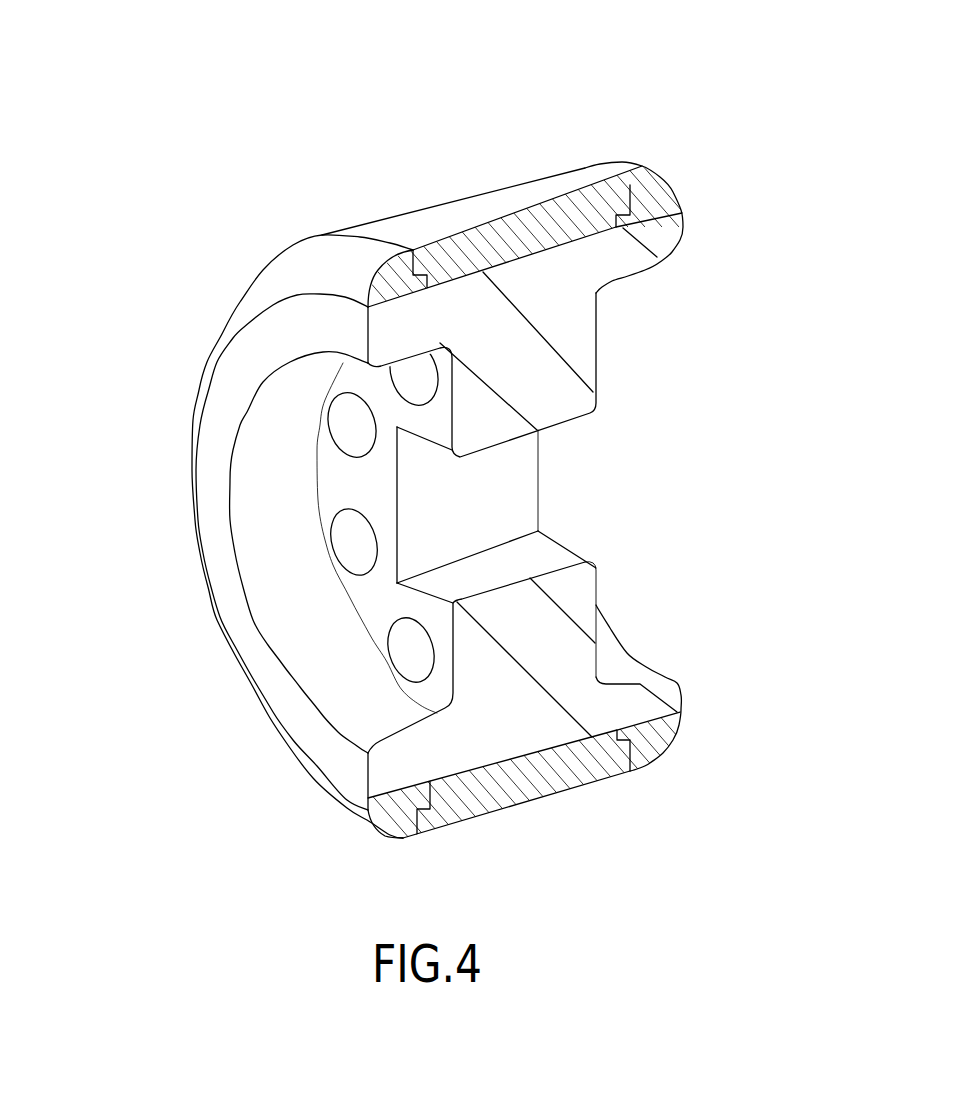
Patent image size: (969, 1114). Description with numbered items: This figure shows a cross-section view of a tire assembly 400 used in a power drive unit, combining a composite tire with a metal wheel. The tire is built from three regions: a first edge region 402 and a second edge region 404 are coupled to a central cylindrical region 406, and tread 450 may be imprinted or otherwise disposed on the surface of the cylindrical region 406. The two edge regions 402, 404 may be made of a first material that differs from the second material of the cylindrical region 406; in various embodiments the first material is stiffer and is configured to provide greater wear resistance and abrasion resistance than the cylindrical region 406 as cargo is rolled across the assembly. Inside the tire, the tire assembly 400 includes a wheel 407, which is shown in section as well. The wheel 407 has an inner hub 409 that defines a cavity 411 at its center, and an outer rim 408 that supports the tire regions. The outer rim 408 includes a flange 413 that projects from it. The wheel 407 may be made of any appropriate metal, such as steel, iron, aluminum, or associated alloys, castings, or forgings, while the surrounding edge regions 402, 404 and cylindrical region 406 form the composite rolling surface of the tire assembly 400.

The tire assembly 400 is at (467, 95).
The first edge region 402 is at (328, 272).
The second edge region 404 is at (665, 193).
The cylindrical region 406 is at (500, 250).
The wheel 407 is at (527, 710).
The outer rim 408 is at (296, 667).
The inner hub 409 is at (392, 475).
The cavity 411 is at (503, 530).
The flange 413 is at (222, 470).
The tread 450 is at (437, 213).